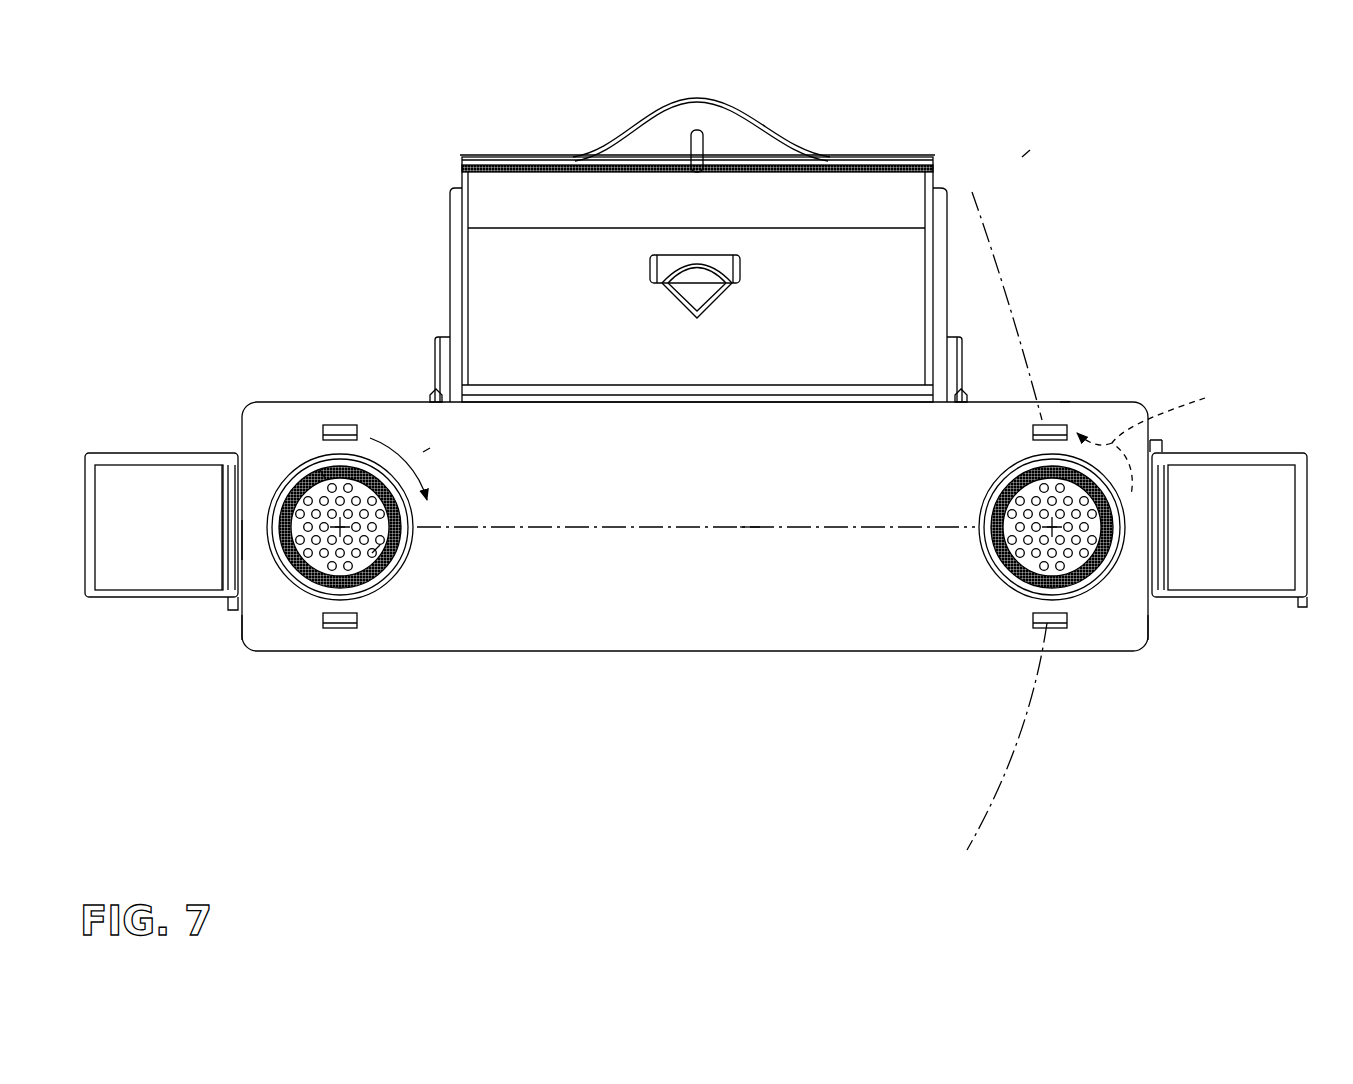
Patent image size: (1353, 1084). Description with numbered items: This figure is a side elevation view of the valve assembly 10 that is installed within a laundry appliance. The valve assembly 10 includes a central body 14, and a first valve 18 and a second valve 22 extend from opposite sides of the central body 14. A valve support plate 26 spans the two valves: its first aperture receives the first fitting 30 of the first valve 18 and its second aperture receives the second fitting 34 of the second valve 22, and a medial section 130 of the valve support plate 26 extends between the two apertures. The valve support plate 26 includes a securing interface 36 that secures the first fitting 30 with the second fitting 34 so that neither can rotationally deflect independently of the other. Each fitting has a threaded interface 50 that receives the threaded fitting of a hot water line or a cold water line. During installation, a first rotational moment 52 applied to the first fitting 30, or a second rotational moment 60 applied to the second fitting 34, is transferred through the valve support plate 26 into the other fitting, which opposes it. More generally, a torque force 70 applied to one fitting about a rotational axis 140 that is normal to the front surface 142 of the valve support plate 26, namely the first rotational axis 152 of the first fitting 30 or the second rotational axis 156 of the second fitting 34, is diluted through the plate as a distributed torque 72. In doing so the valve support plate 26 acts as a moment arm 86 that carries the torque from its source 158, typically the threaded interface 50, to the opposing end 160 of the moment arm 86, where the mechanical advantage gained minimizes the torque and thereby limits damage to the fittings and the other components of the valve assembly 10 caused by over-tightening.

The valve assembly 10 is at (1022, 157).
The central body 14 is at (818, 255).
The first valve 18 is at (188, 445).
The second valve 22 is at (1263, 605).
The valve support plate 26 is at (632, 661).
The first fitting 30 is at (367, 597).
The second fitting 34 is at (995, 575).
The securing interface 36 is at (1065, 397).
The threaded interface 50 is at (300, 600).
The first rotational moment 52 is at (398, 447).
The second rotational moment 60 is at (1153, 435).
The torque force 70 is at (423, 452).
The distributed torque 72 is at (1018, 307).
The moment arm 86 is at (745, 528).
The medial section 130 is at (590, 603).
The rotational axis 140 is at (372, 553).
The front surface 142 is at (707, 493).
The first rotational axis 152 is at (337, 530).
The second rotational axis 156 is at (1103, 552).
The source 158 is at (320, 470).
The opposing end 160 is at (242, 622).